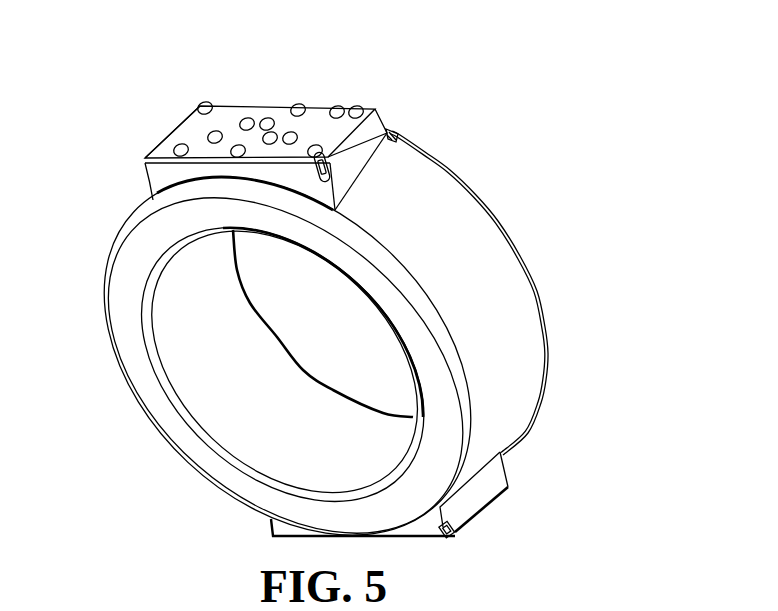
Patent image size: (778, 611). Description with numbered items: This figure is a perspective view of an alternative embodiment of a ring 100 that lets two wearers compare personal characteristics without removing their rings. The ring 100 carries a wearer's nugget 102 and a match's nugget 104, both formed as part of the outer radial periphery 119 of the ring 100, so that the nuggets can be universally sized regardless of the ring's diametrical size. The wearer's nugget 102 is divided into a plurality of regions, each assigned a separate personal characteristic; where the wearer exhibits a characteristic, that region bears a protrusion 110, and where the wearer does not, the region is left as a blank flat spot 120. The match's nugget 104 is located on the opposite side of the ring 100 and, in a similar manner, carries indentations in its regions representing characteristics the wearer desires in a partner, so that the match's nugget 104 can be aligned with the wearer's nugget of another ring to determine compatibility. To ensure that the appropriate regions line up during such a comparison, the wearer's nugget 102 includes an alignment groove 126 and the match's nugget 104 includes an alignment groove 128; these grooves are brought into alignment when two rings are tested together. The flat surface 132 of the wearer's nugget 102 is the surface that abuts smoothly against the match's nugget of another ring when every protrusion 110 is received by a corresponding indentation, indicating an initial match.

The ring 100 is at (587, 311).
The wearer's nugget 102 is at (155, 170).
The match's nugget 104 is at (485, 486).
The protrusions 110 is at (200, 105).
The outer radial periphery 119 is at (457, 268).
The blank flat spot 120 is at (192, 121).
The alignment groove 126 is at (397, 132).
The alignment groove 128 is at (472, 540).
The flat surface 132 is at (167, 142).